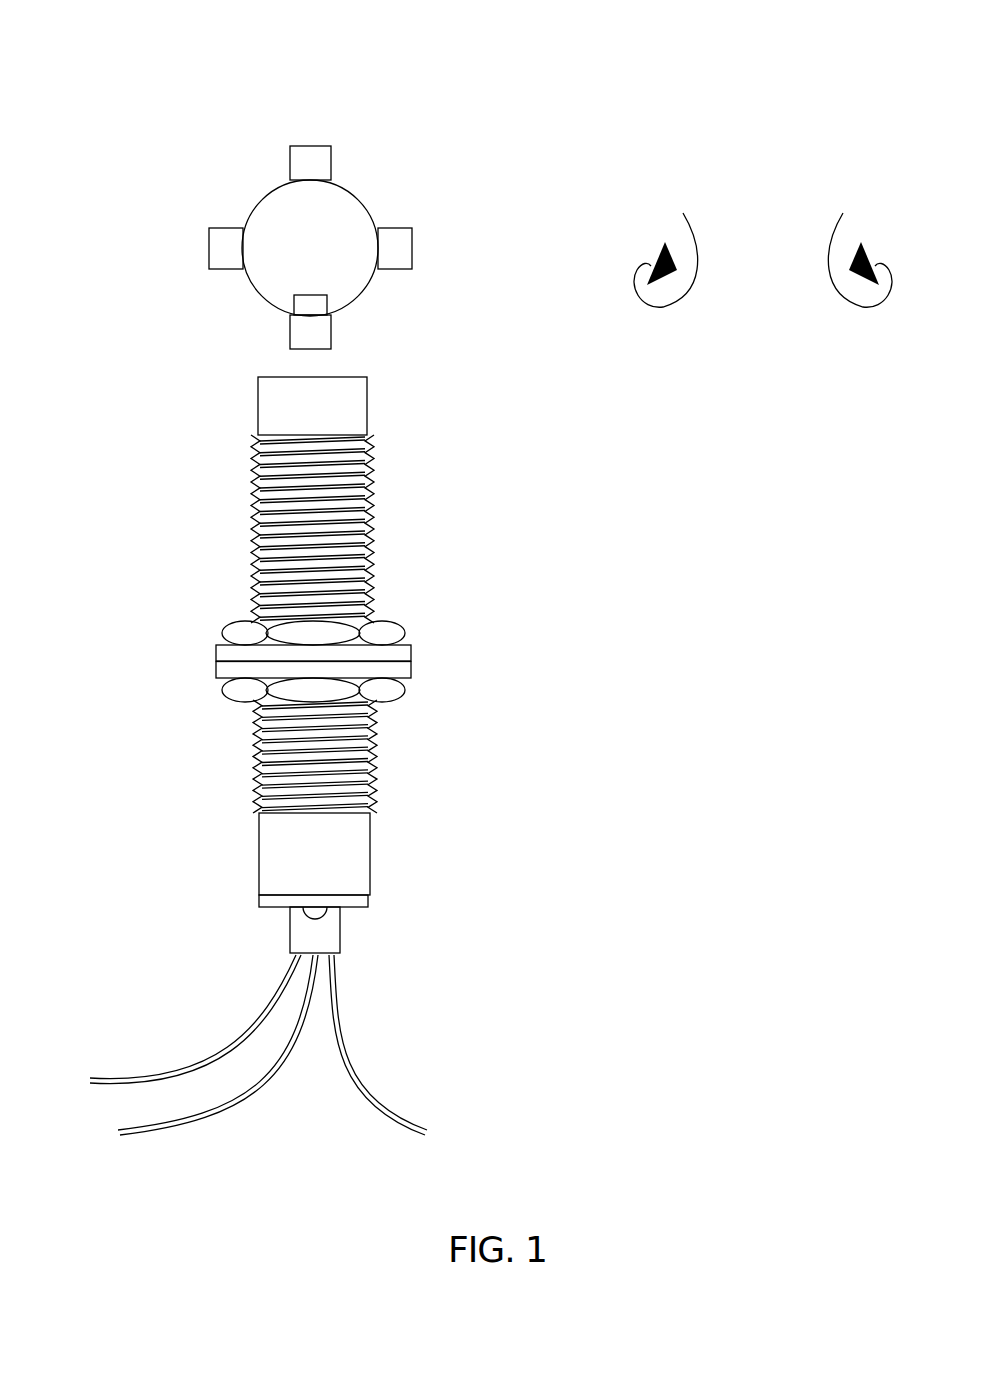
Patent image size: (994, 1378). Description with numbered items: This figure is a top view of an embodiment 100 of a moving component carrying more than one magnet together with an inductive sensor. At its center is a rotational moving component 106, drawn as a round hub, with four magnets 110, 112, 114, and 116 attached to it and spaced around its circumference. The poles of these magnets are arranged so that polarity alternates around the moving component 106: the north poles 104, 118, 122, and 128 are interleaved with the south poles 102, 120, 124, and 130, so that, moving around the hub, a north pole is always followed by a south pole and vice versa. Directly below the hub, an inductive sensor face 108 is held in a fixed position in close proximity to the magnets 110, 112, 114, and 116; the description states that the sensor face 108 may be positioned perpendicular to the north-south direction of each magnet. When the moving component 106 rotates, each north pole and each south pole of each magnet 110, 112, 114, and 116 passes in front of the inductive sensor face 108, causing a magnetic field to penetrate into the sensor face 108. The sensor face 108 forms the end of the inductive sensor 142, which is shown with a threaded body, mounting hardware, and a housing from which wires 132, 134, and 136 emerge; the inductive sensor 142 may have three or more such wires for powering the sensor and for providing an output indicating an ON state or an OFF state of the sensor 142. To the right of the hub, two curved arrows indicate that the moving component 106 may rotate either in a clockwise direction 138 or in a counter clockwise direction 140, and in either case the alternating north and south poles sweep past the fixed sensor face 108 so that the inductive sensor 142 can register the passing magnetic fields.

The sensor assembly 100 is at (158, 75).
The south pole 102 is at (232, 222).
The north pole 104 is at (220, 268).
The moving component 106 is at (333, 252).
The inductive sensor face 108 is at (333, 373).
The magnet 110 is at (217, 247).
The magnet 112 is at (308, 163).
The magnet 114 is at (400, 247).
The magnet 116 is at (313, 343).
The north pole 118 is at (290, 167).
The south pole 120 is at (333, 165).
The north pole 122 is at (390, 222).
The south pole 124 is at (390, 268).
The north pole 128 is at (332, 333).
The south pole 130 is at (290, 327).
The first wire 132 is at (195, 1070).
The second wire 134 is at (253, 1092).
The third wire 136 is at (343, 1057).
The clockwise direction 138 is at (665, 242).
The counter clockwise direction 140 is at (860, 242).
The inductive sensor 142 is at (362, 540).